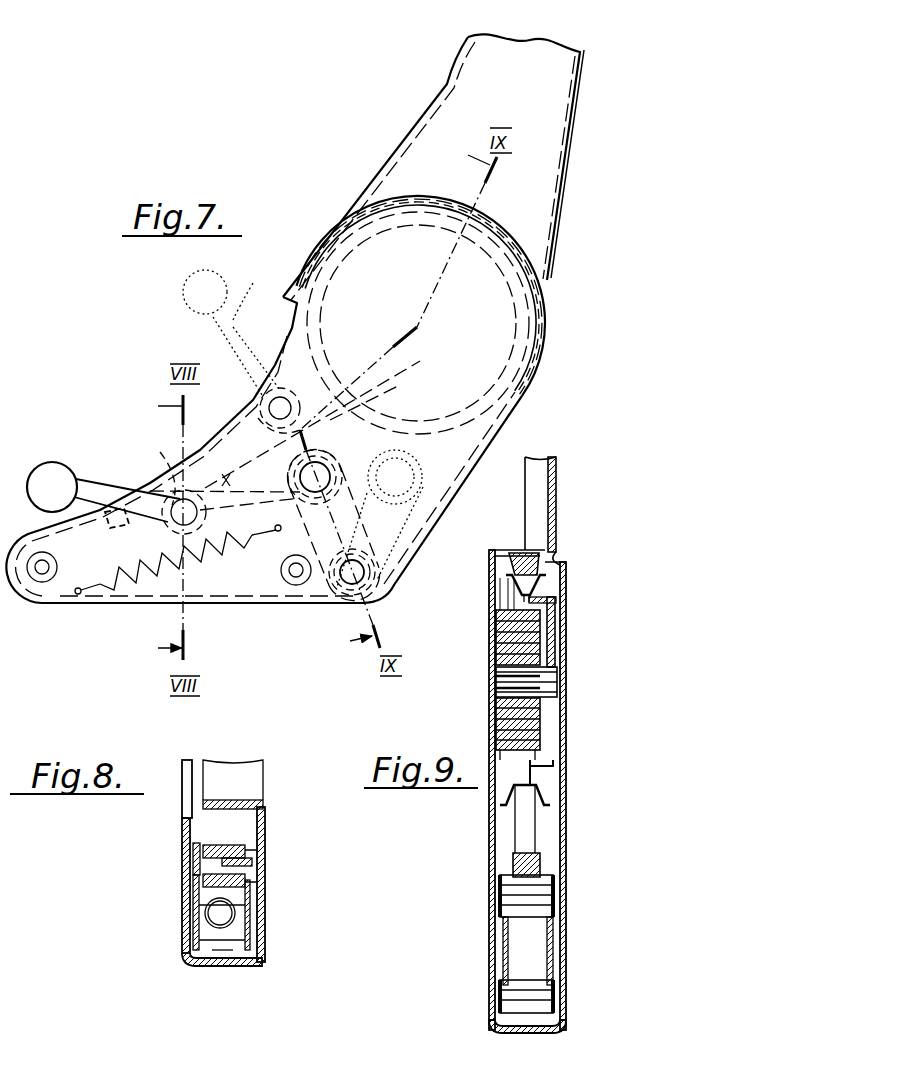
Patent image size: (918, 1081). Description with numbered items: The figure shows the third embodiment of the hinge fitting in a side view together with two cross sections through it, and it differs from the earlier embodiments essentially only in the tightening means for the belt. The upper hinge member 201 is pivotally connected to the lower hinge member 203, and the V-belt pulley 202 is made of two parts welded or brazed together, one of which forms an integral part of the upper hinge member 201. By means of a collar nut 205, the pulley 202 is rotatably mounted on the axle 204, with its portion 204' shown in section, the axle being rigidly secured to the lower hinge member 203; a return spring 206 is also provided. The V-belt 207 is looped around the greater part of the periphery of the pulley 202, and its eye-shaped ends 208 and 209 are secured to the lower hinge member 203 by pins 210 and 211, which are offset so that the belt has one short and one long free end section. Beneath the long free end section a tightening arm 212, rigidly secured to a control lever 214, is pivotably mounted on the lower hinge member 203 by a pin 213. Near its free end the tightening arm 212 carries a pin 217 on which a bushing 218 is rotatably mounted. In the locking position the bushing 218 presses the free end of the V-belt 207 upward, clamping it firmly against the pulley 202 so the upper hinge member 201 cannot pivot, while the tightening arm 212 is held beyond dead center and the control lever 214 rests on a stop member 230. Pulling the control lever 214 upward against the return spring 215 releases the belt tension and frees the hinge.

In FIG. 7, the upper hinge member 201 is at (432, 124).
In FIG. 9, the upper hinge member 201 is at (552, 510).
In FIG. 7, the V-belt pulley 202 is at (508, 357).
In FIG. 9, the V-belt pulley 202 is at (522, 593).
In FIG. 7, the lower hinge member 203 is at (59, 604).
In FIG. 8, the lower hinge member 203 is at (255, 794).
In FIG. 9, the lower hinge member 203 is at (566, 848).
In FIG. 9, the axle 204 is at (553, 682).
In FIG. 9, the shaft portion 204' is at (480, 685).
In FIG. 9, the collar nut 205 is at (551, 655).
In FIG. 9, the return spring 206 is at (496, 640).
In FIG. 7, the V-belt 207 is at (226, 480).
In FIG. 9, the V-belt 207 is at (521, 556).
In FIG. 7, the eye-shaped end 208 is at (268, 402).
In FIG. 7, the eye-shaped end 209 is at (170, 500).
In FIG. 8, the eye-shaped end 209 is at (232, 848).
In FIG. 7, the pin 210 is at (258, 418).
In FIG. 8, the pin 210 is at (250, 878).
In FIG. 7, the pin 211 is at (155, 466).
In FIG. 7, the tightening arm 212 is at (408, 548).
In FIG. 8, the tightening arm 212 is at (196, 924).
In FIG. 9, the tightening arm 212 is at (528, 951).
In FIG. 7, the pin 213 is at (331, 606).
In FIG. 8, the pin 213 is at (222, 935).
In FIG. 9, the pin 213 is at (553, 1005).
In FIG. 7, the control lever 214 is at (88, 478).
In FIG. 8, the control lever 214 is at (193, 856).
In FIG. 7, the return spring 215 is at (205, 582).
In FIG. 8, the return spring 215 is at (214, 901).
In FIG. 7, the pin 217 is at (362, 410).
In FIG. 7, the bushing 218 is at (404, 426).
In FIG. 9, the bushing 218 is at (540, 898).
In FIG. 7, the stop member 230 is at (110, 530).